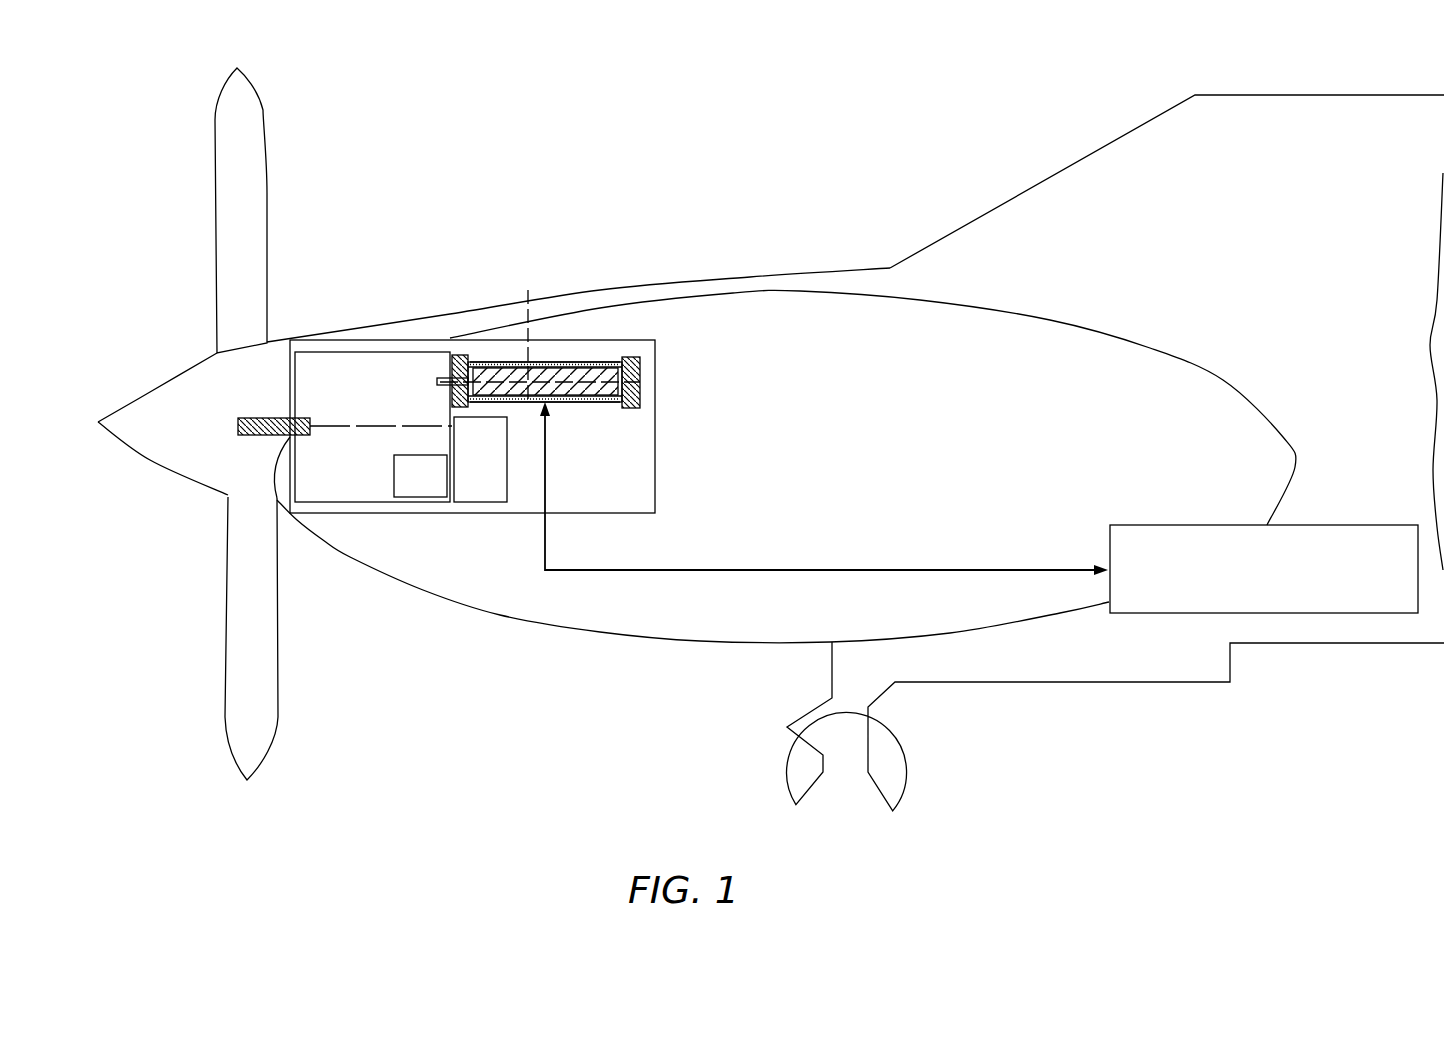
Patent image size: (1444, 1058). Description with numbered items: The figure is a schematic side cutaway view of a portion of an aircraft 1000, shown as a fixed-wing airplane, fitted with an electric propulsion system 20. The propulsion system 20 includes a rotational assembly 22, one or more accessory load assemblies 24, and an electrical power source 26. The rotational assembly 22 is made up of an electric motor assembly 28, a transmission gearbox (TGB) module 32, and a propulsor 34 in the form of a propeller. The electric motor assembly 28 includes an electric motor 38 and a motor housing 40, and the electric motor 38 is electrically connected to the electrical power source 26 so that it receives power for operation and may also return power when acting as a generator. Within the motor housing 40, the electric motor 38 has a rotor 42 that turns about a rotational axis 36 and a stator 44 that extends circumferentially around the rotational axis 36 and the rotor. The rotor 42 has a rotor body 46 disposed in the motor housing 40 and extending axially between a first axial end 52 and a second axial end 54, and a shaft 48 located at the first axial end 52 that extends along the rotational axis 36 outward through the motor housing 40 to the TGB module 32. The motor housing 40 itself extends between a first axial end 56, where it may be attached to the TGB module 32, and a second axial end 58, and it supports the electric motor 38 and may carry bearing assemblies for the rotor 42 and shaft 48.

The aircraft 1000 is at (1098, 96).
The propulsion system 20 is at (584, 330).
The rotational assembly 22 is at (618, 344).
The accessory load assemblies 24 is at (423, 497).
The electrical power source 26 is at (1333, 525).
The electric motor assembly 28 is at (612, 412).
The transmission gearbox (TGB) module 32 is at (327, 503).
The propulsor 34 is at (211, 513).
The rotational axis 36 is at (528, 290).
The electric motor 38 is at (577, 413).
The motor housing 40 is at (637, 393).
The rotor 42 is at (551, 356).
The stator 44 is at (487, 362).
The rotor body 46 is at (558, 387).
The shaft 48 is at (437, 380).
The first axial end of the rotor body 52 is at (444, 392).
The second axial end of the rotor body 54 is at (650, 366).
The first axial end of the motor housing 56 is at (450, 358).
The second axial end of the motor housing 58 is at (640, 380).